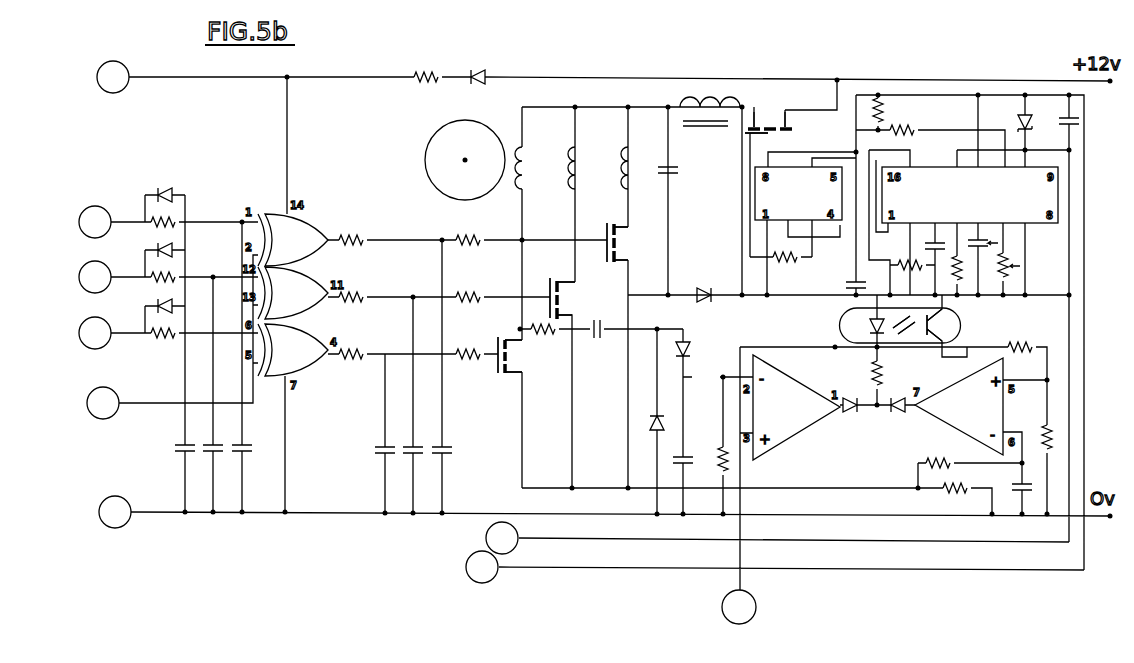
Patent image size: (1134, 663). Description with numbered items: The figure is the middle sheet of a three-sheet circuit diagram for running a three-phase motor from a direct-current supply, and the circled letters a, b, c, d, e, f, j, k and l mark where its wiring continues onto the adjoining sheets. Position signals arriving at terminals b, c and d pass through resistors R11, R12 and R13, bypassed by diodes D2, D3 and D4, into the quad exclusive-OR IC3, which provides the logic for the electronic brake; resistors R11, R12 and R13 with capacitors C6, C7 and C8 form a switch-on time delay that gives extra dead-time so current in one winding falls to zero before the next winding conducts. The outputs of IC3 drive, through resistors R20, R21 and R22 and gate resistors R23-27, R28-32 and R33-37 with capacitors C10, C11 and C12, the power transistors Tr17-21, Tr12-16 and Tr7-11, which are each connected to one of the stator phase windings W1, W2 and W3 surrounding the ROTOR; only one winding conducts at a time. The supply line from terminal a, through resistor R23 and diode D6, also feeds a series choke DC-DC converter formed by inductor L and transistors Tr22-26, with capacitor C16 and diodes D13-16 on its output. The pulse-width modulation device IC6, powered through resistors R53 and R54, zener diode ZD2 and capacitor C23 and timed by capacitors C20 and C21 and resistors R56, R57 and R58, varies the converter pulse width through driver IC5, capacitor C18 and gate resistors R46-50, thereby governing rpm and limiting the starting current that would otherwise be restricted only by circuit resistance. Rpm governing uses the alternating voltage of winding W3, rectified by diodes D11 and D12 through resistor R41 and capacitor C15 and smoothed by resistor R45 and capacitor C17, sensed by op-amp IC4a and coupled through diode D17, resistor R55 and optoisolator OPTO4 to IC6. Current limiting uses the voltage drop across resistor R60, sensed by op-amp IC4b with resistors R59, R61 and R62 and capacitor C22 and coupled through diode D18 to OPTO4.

The connection point a is at (113, 77).
The connection point b is at (95, 222).
The connection point c is at (95, 277).
The connection point d is at (95, 333).
The connection point e is at (103, 403).
The connection point f is at (115, 512).
The connection point j is at (502, 538).
The connection point k is at (482, 567).
The connection point l is at (739, 607).
The resistor R11 is at (144, 234).
The resistor R12 is at (144, 289).
The resistor R13 is at (157, 345).
The diode D2 is at (181, 188).
The diode D3 is at (182, 243).
The diode D4 is at (182, 299).
The quad exclusive-OR gate IC3 is at (293, 295).
The capacitor C6 is at (175, 461).
The capacitor C7 is at (205, 461).
The capacitor C8 is at (247, 461).
The resistor R20 is at (356, 227).
The resistor R21 is at (356, 284).
The resistor R22 is at (356, 340).
The resistors R23-27 is at (450, 227).
The resistors R28-32 is at (472, 284).
The resistors R33-37 is at (472, 339).
The capacitor C10 is at (368, 462).
The capacitor C11 is at (406, 462).
The capacitor C12 is at (452, 462).
The resistor R23 is at (419, 66).
The diode D6 is at (492, 67).
The rotor ROTOR is at (417, 160).
The winding W1 is at (641, 158).
The winding W2 is at (588, 158).
The winding W3 is at (535, 158).
The capacitor C16 is at (687, 166).
The inductor L is at (710, 78).
The transistors Tr22-26 is at (768, 110).
The driver IC5 is at (798, 193).
The resistors R46-50 is at (795, 268).
The capacitor C18 is at (863, 278).
The resistor R53 is at (898, 111).
The resistor R54 is at (917, 137).
The zener diode ZD2 is at (1008, 118).
The capacitor C23 is at (1058, 132).
The pulse-width modulation device IC6 is at (970, 195).
The capacitor C20 is at (919, 249).
The resistor R56 is at (908, 275).
The resistor R57 is at (975, 285).
The capacitor C21 is at (1011, 242).
The resistor R58 is at (1027, 265).
The power transistors Tr7-11 is at (484, 368).
The power transistors Tr12-16 is at (586, 298).
The power transistors Tr17-21 is at (640, 242).
The resistor R41 is at (543, 344).
The capacitor C15 is at (602, 343).
The diode D11 is at (624, 408).
The diodes D13-16 is at (716, 309).
The diode D12 is at (702, 348).
The resistor R45 is at (709, 451).
The capacitor C17 is at (694, 469).
The optoisolator OPTO4 is at (868, 325).
The resistor R55 is at (852, 373).
The operational amplifier IC4a is at (796, 407).
The operational amplifier IC4b is at (959, 406).
The diode D17 is at (839, 421).
The diode D18 is at (898, 421).
The resistor R61 is at (1024, 337).
The resistor R62 is at (1032, 430).
The resistor R59 is at (938, 453).
The resistor R60 is at (946, 497).
The capacitor C22 is at (1006, 480).